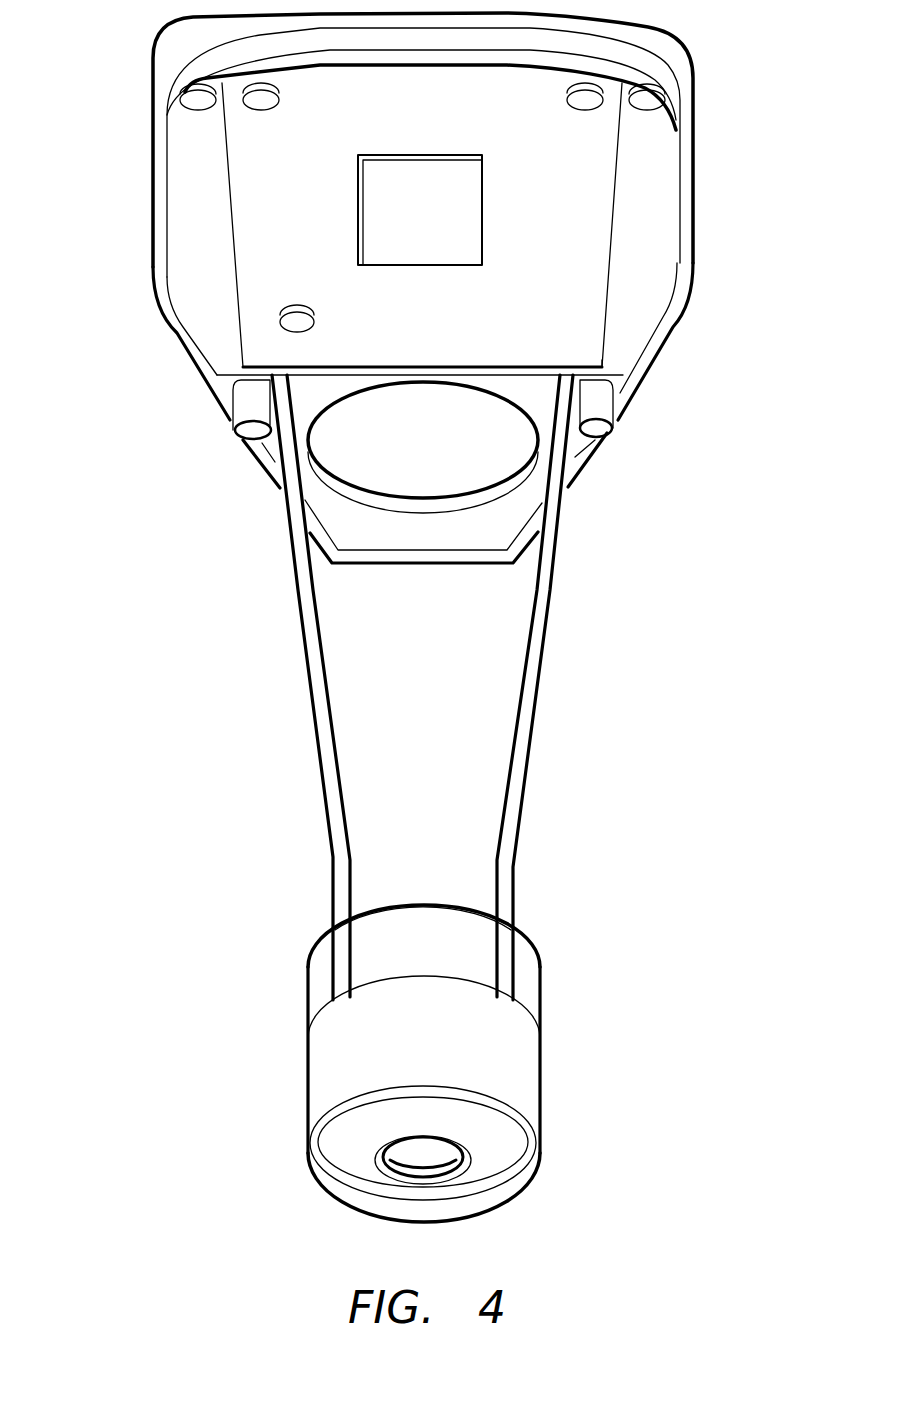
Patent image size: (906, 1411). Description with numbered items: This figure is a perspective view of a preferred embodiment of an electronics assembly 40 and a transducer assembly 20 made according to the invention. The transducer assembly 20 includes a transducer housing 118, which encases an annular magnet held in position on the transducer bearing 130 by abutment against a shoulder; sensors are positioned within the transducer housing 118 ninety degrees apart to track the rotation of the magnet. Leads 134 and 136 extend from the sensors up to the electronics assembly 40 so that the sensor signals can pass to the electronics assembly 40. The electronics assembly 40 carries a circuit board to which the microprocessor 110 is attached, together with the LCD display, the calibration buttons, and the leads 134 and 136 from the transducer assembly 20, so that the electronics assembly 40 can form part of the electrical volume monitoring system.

The transducer assembly 20 is at (582, 1088).
The electronics assembly 40 is at (712, 238).
The microprocessor 110 is at (423, 205).
The transducer housing 118 is at (308, 1058).
The transducer bearing 130 is at (423, 1155).
The lead 134 is at (312, 703).
The lead 136 is at (537, 700).